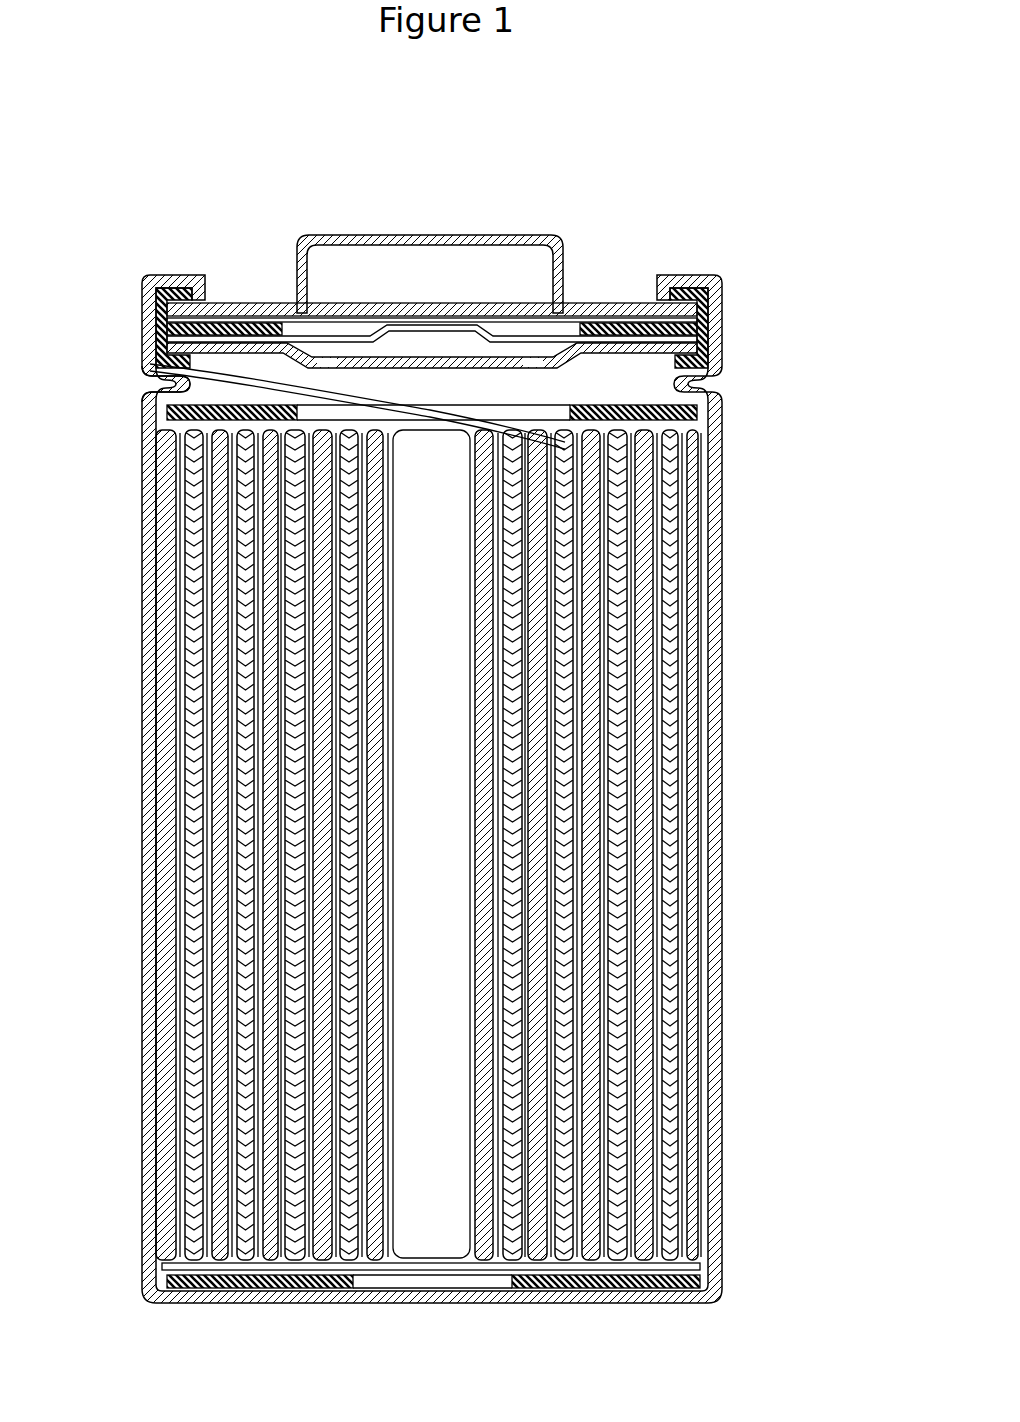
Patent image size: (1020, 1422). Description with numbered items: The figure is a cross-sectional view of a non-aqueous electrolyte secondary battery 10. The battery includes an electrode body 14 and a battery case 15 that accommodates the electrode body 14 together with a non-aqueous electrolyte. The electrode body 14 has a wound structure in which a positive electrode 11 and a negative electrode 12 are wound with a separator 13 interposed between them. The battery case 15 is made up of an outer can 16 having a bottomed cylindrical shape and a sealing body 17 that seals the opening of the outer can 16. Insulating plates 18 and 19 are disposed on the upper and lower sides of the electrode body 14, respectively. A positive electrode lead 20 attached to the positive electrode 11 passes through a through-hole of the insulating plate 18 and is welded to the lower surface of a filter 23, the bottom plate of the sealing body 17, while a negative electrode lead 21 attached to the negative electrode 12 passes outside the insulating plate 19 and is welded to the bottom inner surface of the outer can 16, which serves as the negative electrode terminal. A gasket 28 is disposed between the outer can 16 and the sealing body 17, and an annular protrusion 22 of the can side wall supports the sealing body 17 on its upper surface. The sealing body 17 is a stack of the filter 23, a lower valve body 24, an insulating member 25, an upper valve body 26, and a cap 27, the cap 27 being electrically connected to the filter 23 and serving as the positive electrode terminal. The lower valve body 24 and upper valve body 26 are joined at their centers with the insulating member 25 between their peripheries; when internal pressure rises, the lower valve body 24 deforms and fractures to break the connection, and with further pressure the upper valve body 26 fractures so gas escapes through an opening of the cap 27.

The non-aqueous electrolyte secondary battery 10 is at (737, 84).
The positive electrode 11 is at (672, 926).
The negative electrode 12 is at (690, 964).
The separator 13 is at (700, 1000).
The electrode body 14 is at (828, 912).
The battery case 15 is at (700, 163).
The outer can 16 is at (682, 277).
The sealing body 17 is at (598, 302).
The insulating plate 18 is at (715, 415).
The insulating plate 19 is at (715, 1284).
The positive electrode lead 20 is at (140, 358).
The negative electrode lead 21 is at (160, 1266).
The protrusion 22 is at (145, 380).
The filter 23 is at (433, 356).
The lower valve body 24 is at (315, 345).
The insulating member 25 is at (240, 300).
The upper valve body 26 is at (343, 338).
The cap 27 is at (512, 240).
The gasket 28 is at (712, 300).